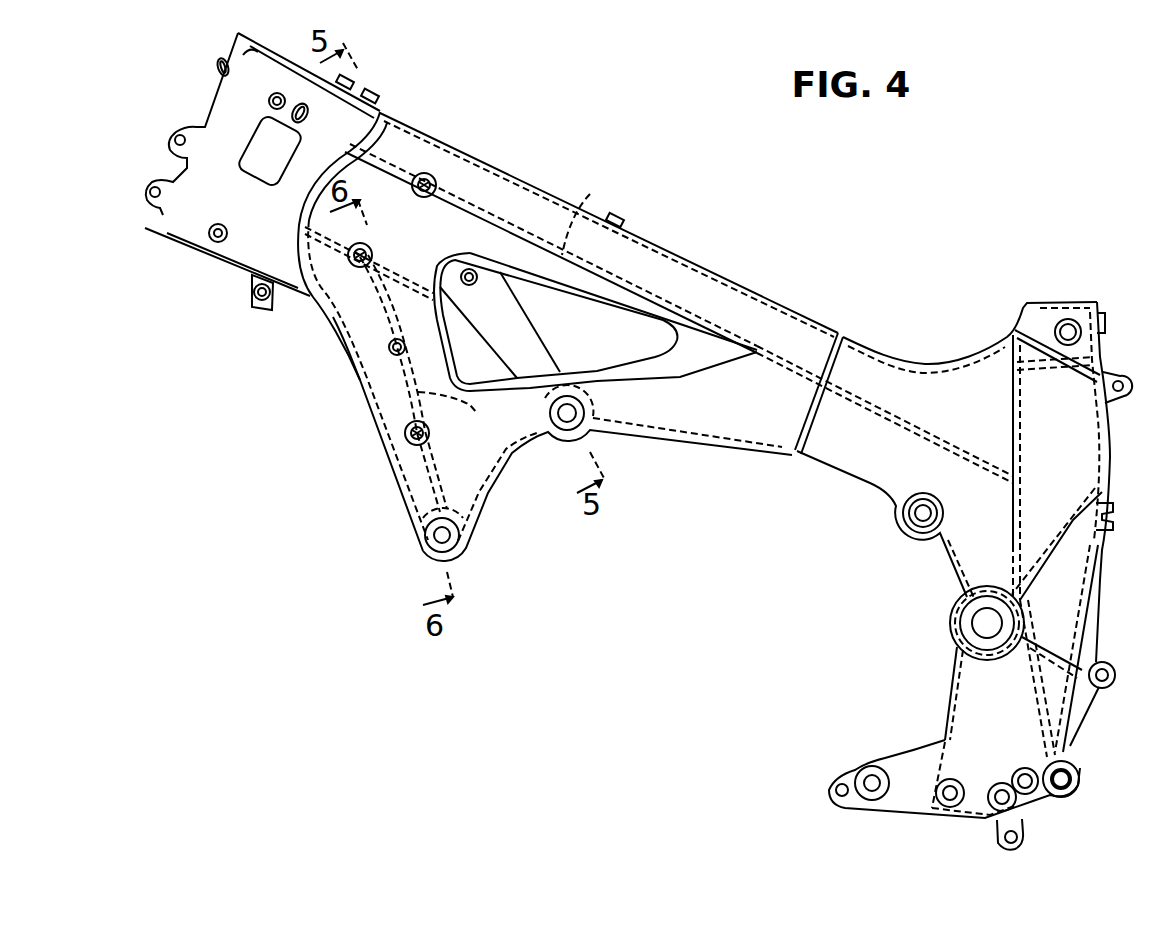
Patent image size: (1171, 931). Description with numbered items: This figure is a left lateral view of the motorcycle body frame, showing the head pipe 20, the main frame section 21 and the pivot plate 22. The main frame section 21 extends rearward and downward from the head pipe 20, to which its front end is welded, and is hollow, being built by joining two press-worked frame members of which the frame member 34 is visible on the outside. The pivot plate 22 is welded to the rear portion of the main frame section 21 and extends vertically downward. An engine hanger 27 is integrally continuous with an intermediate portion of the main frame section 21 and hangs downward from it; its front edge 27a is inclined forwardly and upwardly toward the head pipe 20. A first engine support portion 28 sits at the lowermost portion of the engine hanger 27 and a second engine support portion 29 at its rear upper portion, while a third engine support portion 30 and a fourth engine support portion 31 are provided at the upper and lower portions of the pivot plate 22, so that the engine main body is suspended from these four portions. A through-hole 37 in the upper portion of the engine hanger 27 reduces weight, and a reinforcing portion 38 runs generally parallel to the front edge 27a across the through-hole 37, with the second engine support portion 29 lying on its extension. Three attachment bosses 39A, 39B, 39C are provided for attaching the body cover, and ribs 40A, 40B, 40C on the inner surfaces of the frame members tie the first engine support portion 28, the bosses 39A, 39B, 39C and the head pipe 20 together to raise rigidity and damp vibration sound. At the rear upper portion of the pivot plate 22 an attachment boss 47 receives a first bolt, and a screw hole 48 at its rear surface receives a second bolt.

The head pipe 20 is at (248, 252).
The main frame section 21 is at (521, 186).
The pivot plate 22 is at (887, 368).
The engine hanger 27 is at (485, 493).
The front edge 27a is at (360, 388).
The first engine support portion 28 is at (440, 560).
The second engine support portion 29 is at (570, 432).
The third engine support portion 30 is at (917, 540).
The fourth engine support portion 31 is at (875, 762).
The frame member 34 is at (731, 303).
The through-hole 37 is at (598, 302).
The reinforcing portion 38 is at (525, 340).
The attachment boss 39A is at (404, 436).
The attachment boss 39B is at (357, 267).
The attachment boss 39C is at (432, 176).
The rib 40A is at (477, 413).
The rib 40B is at (400, 275).
The rib 40C is at (590, 194).
The attachment boss 47 is at (1068, 318).
The screw hole 48 is at (1116, 518).